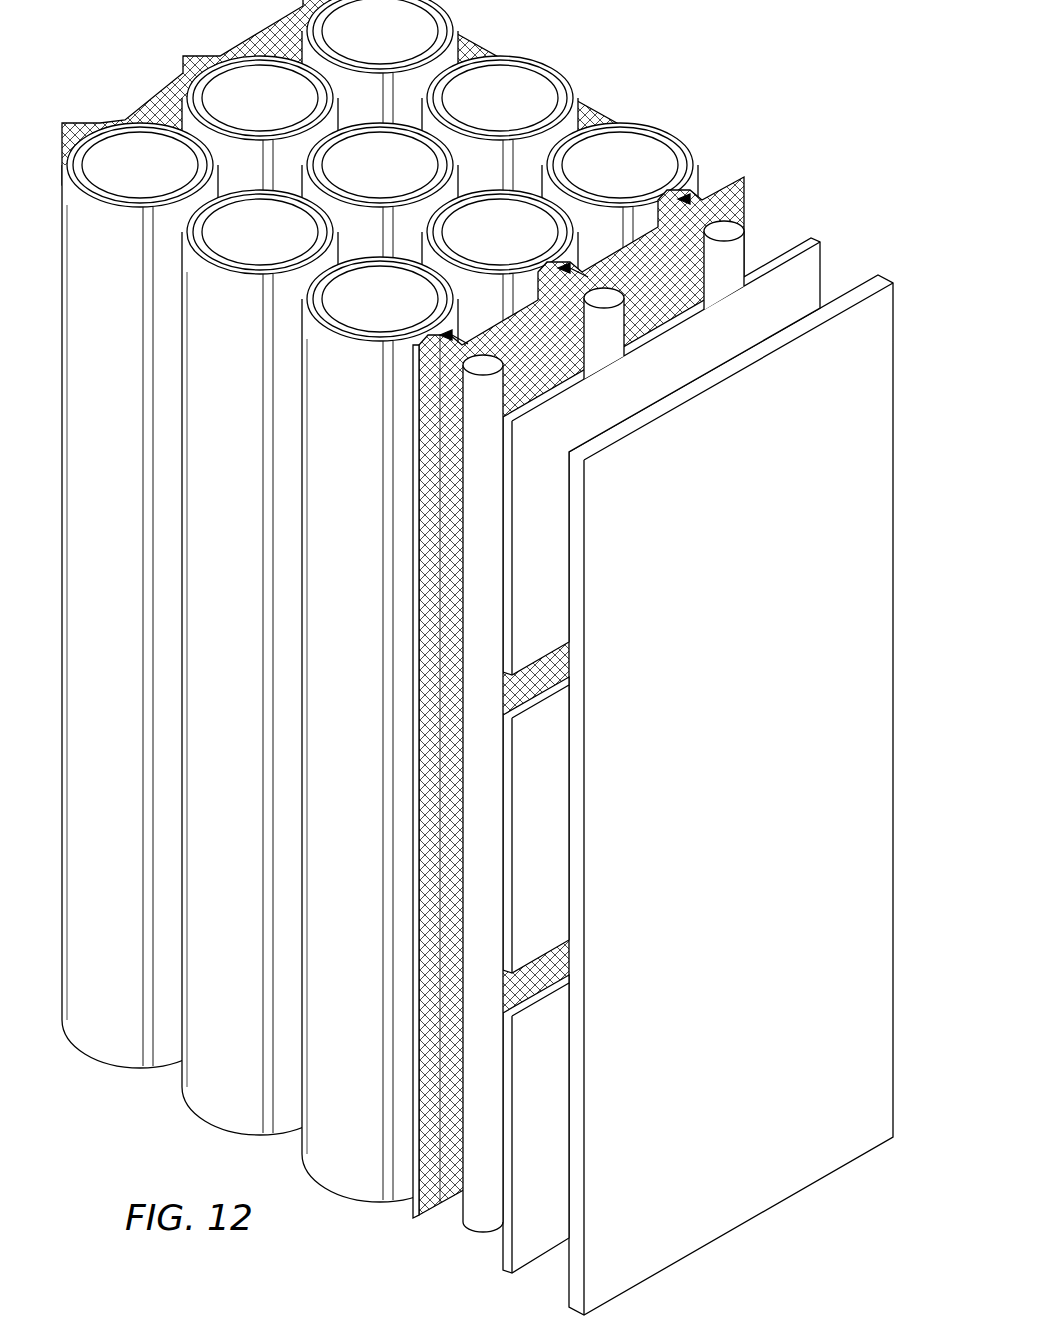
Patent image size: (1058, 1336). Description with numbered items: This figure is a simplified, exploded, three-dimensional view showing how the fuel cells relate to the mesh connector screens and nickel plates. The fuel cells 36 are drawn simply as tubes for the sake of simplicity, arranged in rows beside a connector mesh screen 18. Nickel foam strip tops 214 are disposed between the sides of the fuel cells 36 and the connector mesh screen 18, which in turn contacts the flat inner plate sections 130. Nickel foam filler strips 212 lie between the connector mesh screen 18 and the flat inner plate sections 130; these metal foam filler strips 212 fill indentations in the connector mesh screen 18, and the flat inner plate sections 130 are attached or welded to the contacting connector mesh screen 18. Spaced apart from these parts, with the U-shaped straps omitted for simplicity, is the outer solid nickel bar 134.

The fuel cells 36 is at (588, 76).
The nickel foam strip tops 214 is at (312, 114).
The connector mesh screens 18 is at (690, 202).
The nickel foam filler strips 212 is at (737, 247).
The flat inner plate sections 130 is at (540, 555).
The outer solid nickel bar 134 is at (867, 332).